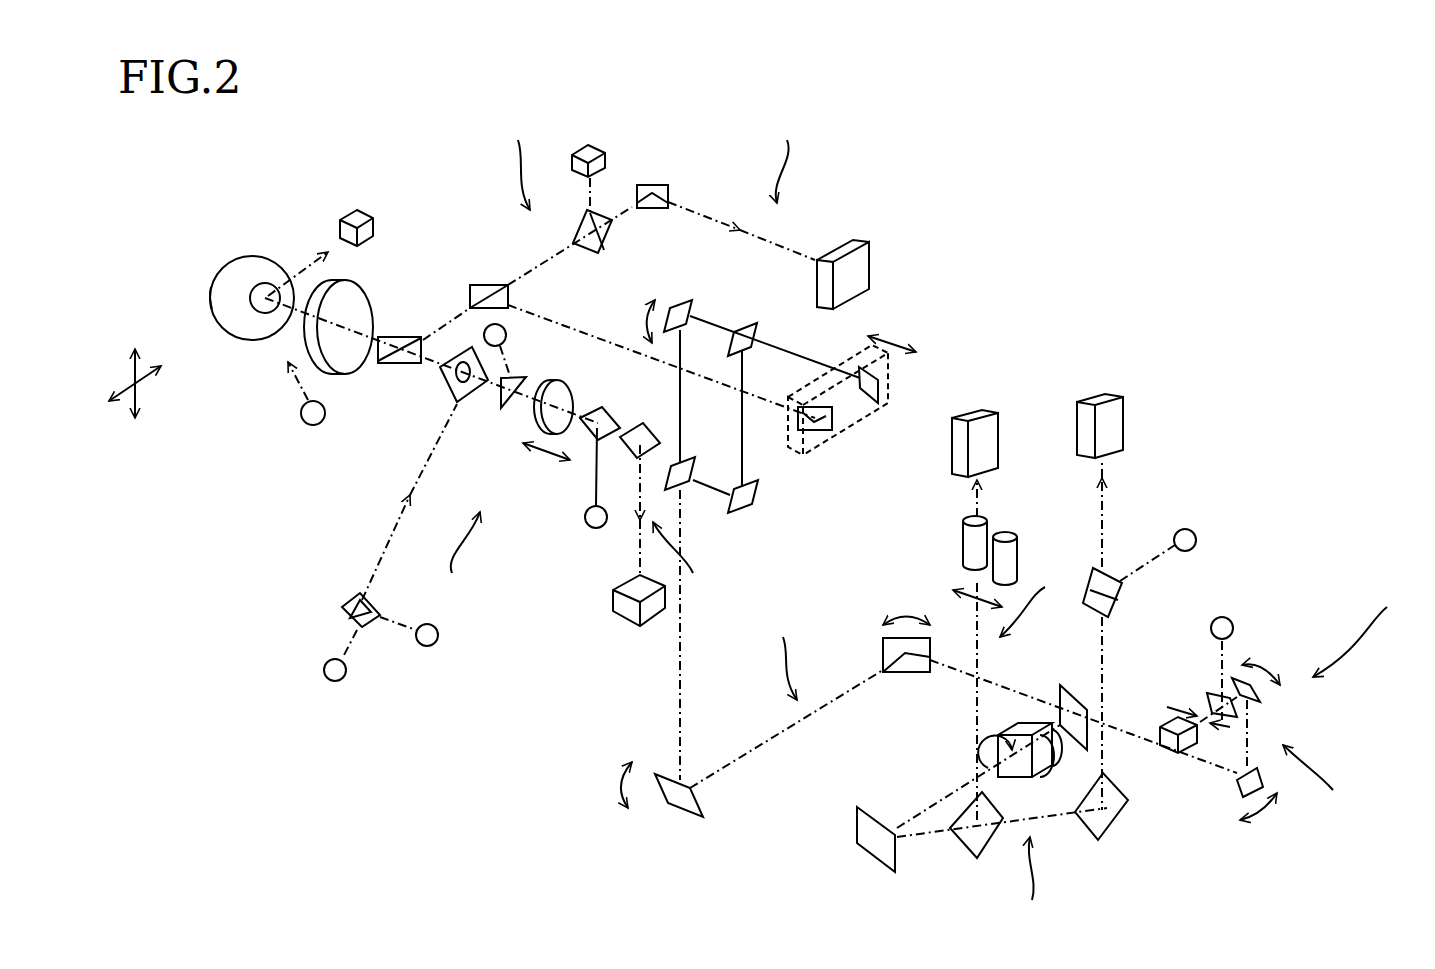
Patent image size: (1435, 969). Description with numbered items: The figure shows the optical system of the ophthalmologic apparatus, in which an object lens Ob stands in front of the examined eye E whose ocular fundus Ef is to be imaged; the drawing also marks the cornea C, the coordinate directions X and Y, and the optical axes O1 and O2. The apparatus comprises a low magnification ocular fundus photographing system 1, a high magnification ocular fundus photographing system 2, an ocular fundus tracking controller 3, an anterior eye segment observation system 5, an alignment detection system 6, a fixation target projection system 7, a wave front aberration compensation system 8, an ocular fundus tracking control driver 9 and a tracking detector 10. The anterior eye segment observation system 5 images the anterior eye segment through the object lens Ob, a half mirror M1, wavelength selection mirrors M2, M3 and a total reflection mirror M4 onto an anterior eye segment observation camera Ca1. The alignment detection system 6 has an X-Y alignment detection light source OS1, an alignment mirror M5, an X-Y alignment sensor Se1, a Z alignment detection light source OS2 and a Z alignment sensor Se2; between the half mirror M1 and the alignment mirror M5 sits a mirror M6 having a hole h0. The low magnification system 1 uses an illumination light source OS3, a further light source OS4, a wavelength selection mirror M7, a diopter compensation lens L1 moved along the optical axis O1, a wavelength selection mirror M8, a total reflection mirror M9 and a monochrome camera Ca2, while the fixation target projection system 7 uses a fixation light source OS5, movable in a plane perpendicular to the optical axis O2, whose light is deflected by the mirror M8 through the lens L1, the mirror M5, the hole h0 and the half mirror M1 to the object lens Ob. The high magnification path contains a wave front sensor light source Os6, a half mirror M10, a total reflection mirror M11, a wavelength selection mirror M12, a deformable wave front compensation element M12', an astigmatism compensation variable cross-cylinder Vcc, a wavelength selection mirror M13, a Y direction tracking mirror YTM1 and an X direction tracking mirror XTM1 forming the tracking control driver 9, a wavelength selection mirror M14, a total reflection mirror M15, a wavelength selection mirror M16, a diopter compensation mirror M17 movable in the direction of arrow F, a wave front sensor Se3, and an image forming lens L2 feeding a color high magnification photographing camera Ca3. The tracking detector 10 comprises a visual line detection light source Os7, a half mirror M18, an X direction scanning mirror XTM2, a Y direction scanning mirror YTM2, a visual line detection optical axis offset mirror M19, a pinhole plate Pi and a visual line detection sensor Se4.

The examined eye E is at (245, 263).
The ocular fundus Ef is at (211, 287).
The cornea C is at (265, 314).
The object lens Ob is at (343, 302).
The optical axis O1 is at (377, 318).
The half mirror M1 is at (384, 364).
The hole h0 is at (457, 362).
The mirror having a hole M6 is at (460, 404).
The alignment mirror M5 is at (503, 410).
The low magnification photographing diopter compensation lens L1 is at (575, 395).
The wavelength selection mirror M8 is at (612, 445).
The total reflection mirror M9 is at (647, 425).
The optical axis O2 is at (573, 482).
The X-Y alignment detection light source OS1 is at (507, 340).
The Z alignment detection light source OS2 is at (313, 426).
The low magnification photographing illumination light source OS3 is at (333, 682).
The light source OS4 is at (424, 647).
The fixation light source OS5 is at (590, 528).
The wavelength selection mirror M7 is at (353, 594).
The X-Y alignment sensor Se1 is at (590, 144).
The Z alignment sensor Se2 is at (356, 210).
The wavelength selection mirror M2 is at (490, 285).
The wavelength selection mirror M3 is at (590, 255).
The total reflection mirror M4 is at (660, 186).
The anterior eye segment observation camera Ca1 is at (855, 240).
The visual line detection optical axis offset mirror M19 is at (683, 300).
The wavelength selection mirror M16 is at (752, 324).
The wavelength selection mirror M14 is at (695, 457).
The total reflection mirror M15 is at (750, 510).
The high magnification photographing diopter compensation mirror M17 is at (855, 425).
The arrow F-F direction F is at (891, 342).
The low magnification photographing camera Ca2 is at (623, 628).
The high magnification photographing camera Ca3 is at (988, 410).
The image forming lens L2 is at (1011, 534).
The wave front sensor Se3 is at (1108, 396).
The half mirror M10 is at (1113, 568).
The wave front sensor light source Os6 is at (1197, 538).
The visual line detection light source Os7 is at (1234, 627).
The half mirror M18 is at (1207, 696).
The wavelength selection mirror M13 is at (1065, 686).
The visual line detection sensor Se4 is at (1157, 735).
The Y direction tracking mirror YTM1 is at (903, 673).
The Y direction scanning mirror YTM2 is at (1262, 698).
The X direction tracking mirror XTM1 is at (672, 805).
The X direction scanning mirror XTM2 is at (1238, 797).
The pinhole plate Pi is at (1230, 728).
The astigmatism compensation variable cross-cylinder Vcc is at (1003, 733).
The total reflection mirror M11 is at (1093, 842).
The wavelength selection mirror M12 is at (973, 858).
The wave front compensation element M12' is at (974, 826).
The X axis X is at (124, 392).
The Y axis Y is at (137, 367).
The low magnification ocular fundus photographing system 1 is at (440, 603).
The high magnification ocular fundus photographing system 2 is at (1045, 606).
The ocular fundus tracking controller 3 is at (1392, 613).
The anterior eye segment observation system 5 is at (784, 133).
The alignment detection system 6 is at (507, 135).
The fixation target projection system 7 is at (687, 603).
The wave front aberration compensation system 8 is at (1025, 933).
The ocular fundus tracking control driver 9 is at (772, 636).
The tracking detector 10 is at (1342, 805).